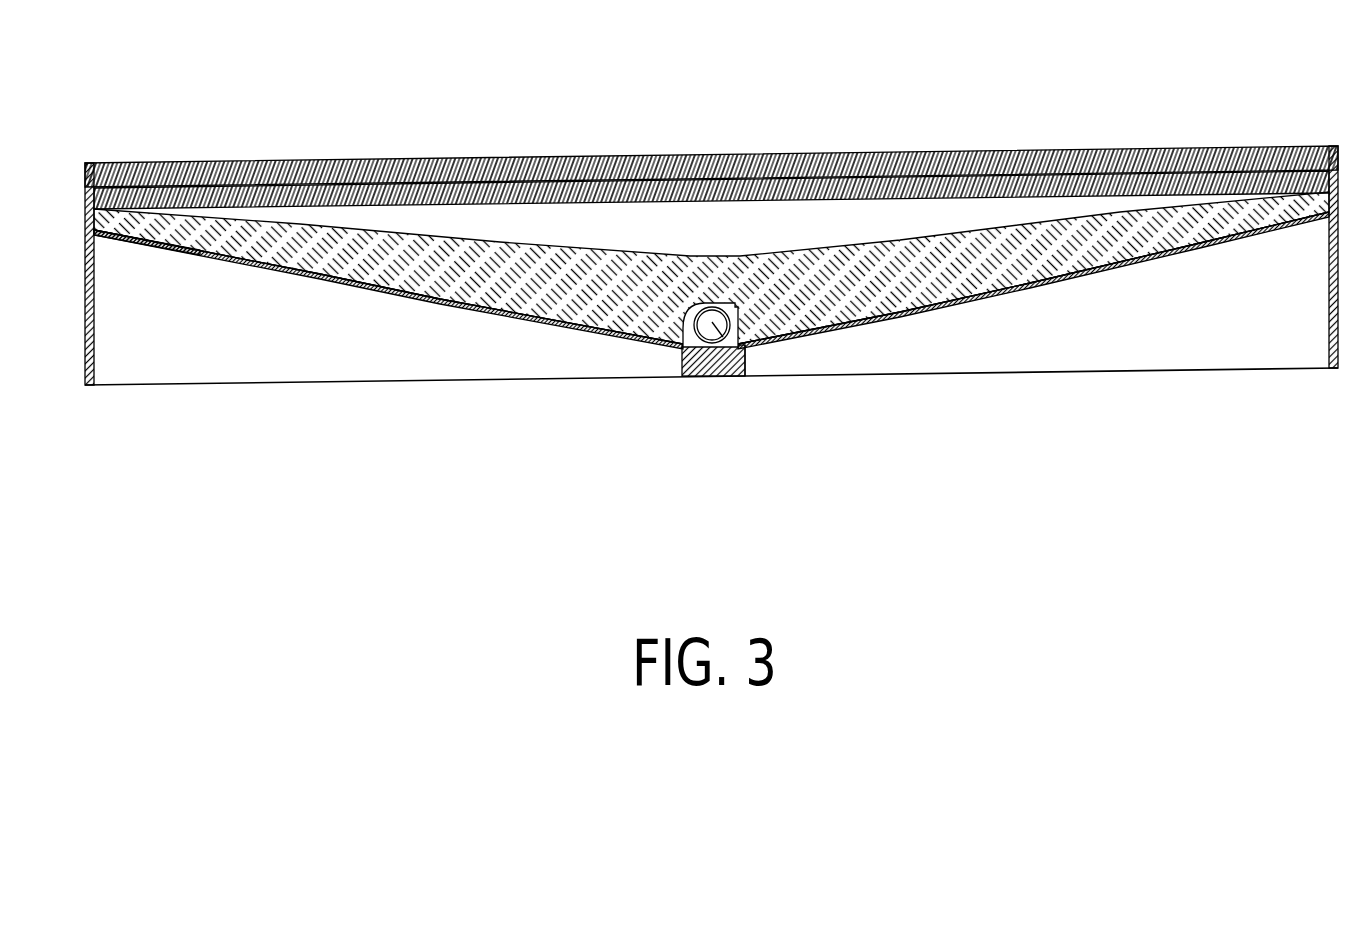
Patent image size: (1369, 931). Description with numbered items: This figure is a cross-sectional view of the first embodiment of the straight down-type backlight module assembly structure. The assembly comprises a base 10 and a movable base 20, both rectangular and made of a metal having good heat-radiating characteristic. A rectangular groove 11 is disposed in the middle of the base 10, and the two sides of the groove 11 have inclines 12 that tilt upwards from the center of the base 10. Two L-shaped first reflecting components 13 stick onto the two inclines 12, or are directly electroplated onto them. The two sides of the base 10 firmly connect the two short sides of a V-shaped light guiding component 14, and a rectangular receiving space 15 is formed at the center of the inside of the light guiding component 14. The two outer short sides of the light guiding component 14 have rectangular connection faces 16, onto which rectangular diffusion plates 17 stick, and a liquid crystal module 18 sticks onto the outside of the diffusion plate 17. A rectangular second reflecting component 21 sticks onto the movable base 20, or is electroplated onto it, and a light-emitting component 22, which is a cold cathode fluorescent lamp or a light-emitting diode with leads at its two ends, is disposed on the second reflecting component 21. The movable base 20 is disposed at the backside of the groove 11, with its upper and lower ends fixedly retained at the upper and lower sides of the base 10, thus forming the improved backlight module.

The base 10 is at (1128, 352).
The rectangular groove 11 is at (683, 352).
The inclines 12 is at (352, 283).
The first reflecting components 13 is at (248, 237).
The V-shaped light guiding component 14 is at (133, 243).
The rectangular receiving space 15 is at (772, 334).
The connection faces 16 is at (90, 162).
The diffusion plates 17 is at (337, 185).
The liquid crystal module 18 is at (300, 165).
The movable base 20 is at (702, 376).
The second reflecting component 21 is at (725, 376).
The light-emitting component 22 is at (743, 374).